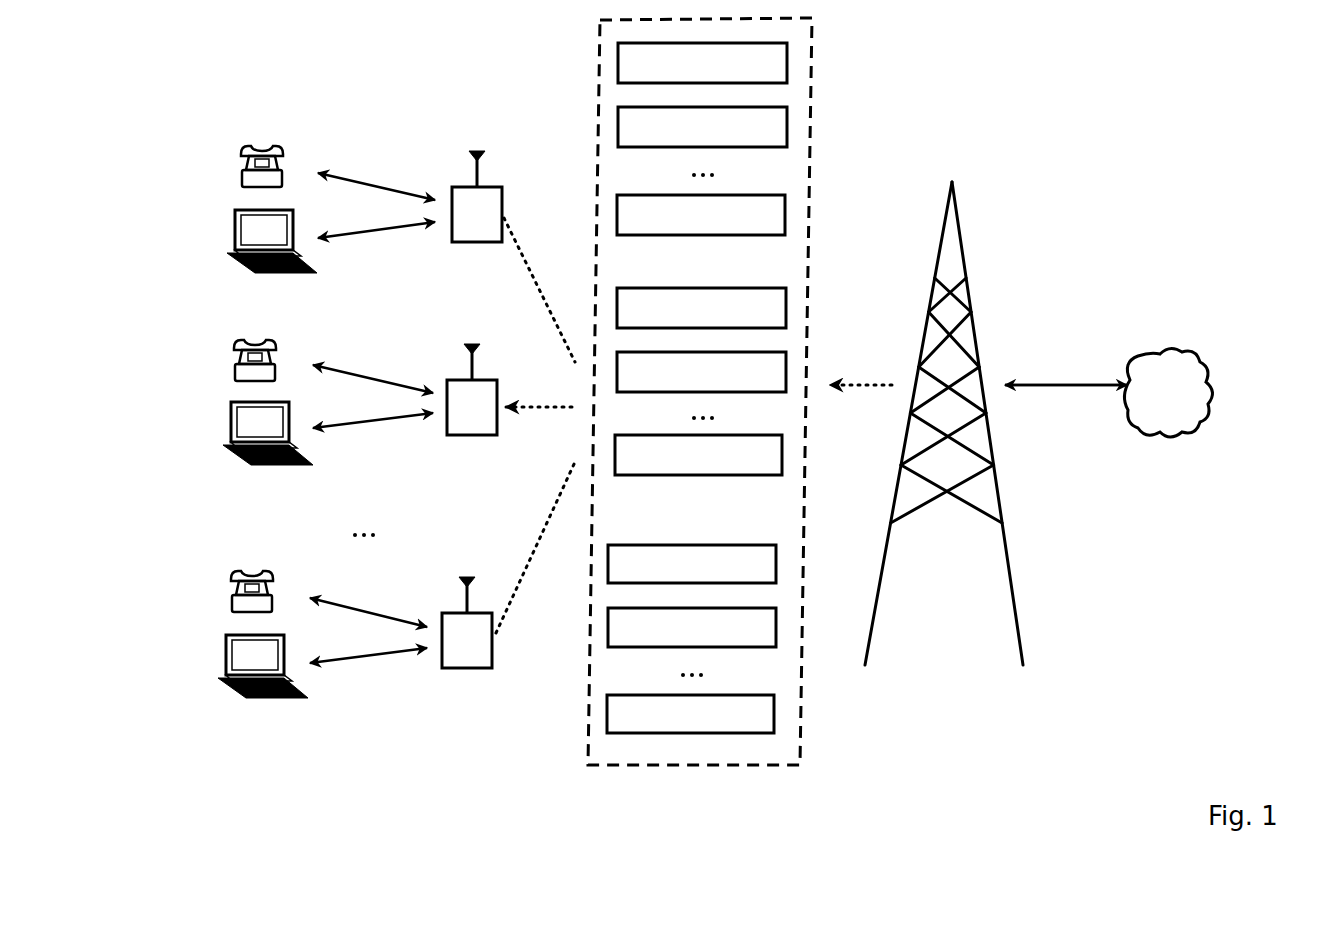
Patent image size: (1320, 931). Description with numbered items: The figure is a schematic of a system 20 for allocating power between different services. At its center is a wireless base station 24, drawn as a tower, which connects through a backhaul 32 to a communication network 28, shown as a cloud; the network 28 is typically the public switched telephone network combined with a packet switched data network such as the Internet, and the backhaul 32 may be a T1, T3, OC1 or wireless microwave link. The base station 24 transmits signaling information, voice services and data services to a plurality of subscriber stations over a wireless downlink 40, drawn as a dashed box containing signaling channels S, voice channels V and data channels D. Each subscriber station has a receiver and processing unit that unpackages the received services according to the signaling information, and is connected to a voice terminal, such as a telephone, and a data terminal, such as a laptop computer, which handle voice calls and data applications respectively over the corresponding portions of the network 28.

The system for allocating power 20 is at (957, 736).
The wireless base station 24 is at (968, 197).
The communication network 28 is at (1168, 392).
The backhaul 32 is at (1057, 367).
The wireless downlink 40 is at (846, 84).